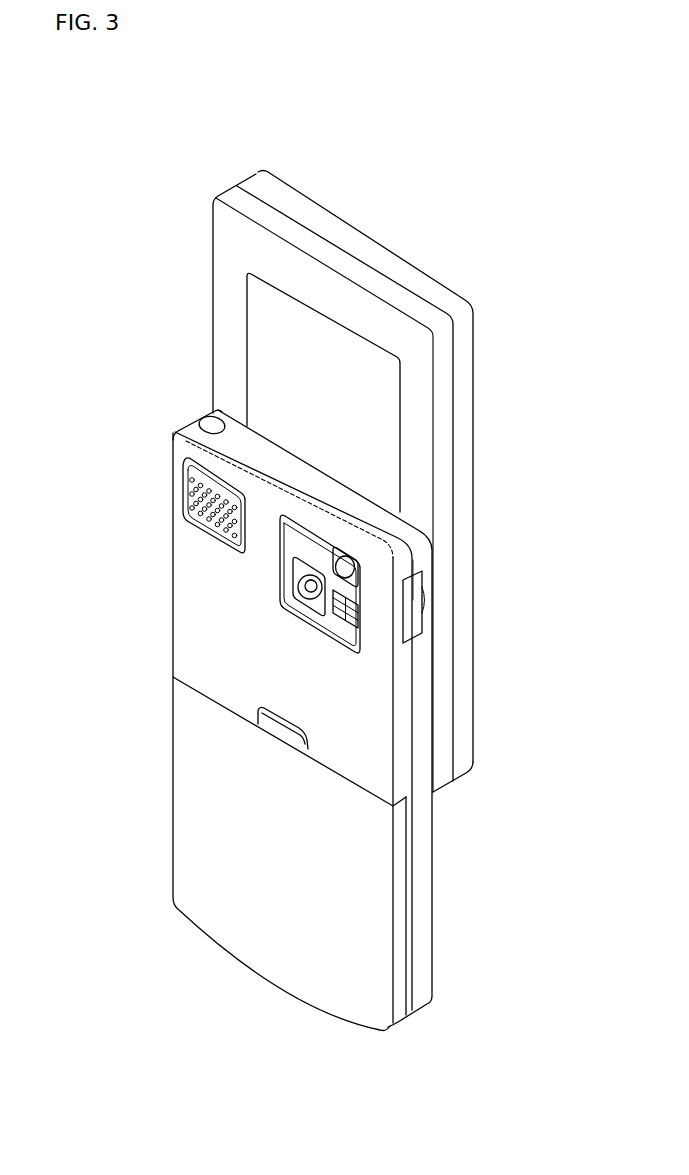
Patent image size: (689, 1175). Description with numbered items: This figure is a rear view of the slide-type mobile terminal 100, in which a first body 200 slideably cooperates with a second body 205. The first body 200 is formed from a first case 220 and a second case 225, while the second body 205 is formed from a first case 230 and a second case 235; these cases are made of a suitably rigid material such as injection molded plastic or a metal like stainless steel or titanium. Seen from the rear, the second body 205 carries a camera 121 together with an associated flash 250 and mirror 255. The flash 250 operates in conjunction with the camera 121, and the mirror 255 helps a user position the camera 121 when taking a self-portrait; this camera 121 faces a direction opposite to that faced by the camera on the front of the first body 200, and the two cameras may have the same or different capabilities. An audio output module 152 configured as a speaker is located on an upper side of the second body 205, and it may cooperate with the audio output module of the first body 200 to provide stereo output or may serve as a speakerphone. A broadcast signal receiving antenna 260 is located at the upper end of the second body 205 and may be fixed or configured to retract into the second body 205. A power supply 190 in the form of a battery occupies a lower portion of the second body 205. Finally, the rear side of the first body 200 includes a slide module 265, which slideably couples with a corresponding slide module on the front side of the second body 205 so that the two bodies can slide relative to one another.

The mobile terminal 100 is at (453, 208).
The first body 200 is at (184, 305).
The second body 205 is at (157, 594).
The first case 220 is at (255, 182).
The second case 225 is at (240, 195).
The slide module 265 is at (249, 375).
The broadcast signal receiving antenna 260 is at (203, 422).
The audio output module 152 is at (187, 500).
The flash 250 is at (362, 652).
The mirror 255 is at (347, 566).
The camera 121 is at (310, 590).
The power supply 190 is at (185, 759).
The second case 235 is at (403, 765).
The first case 230 is at (423, 818).